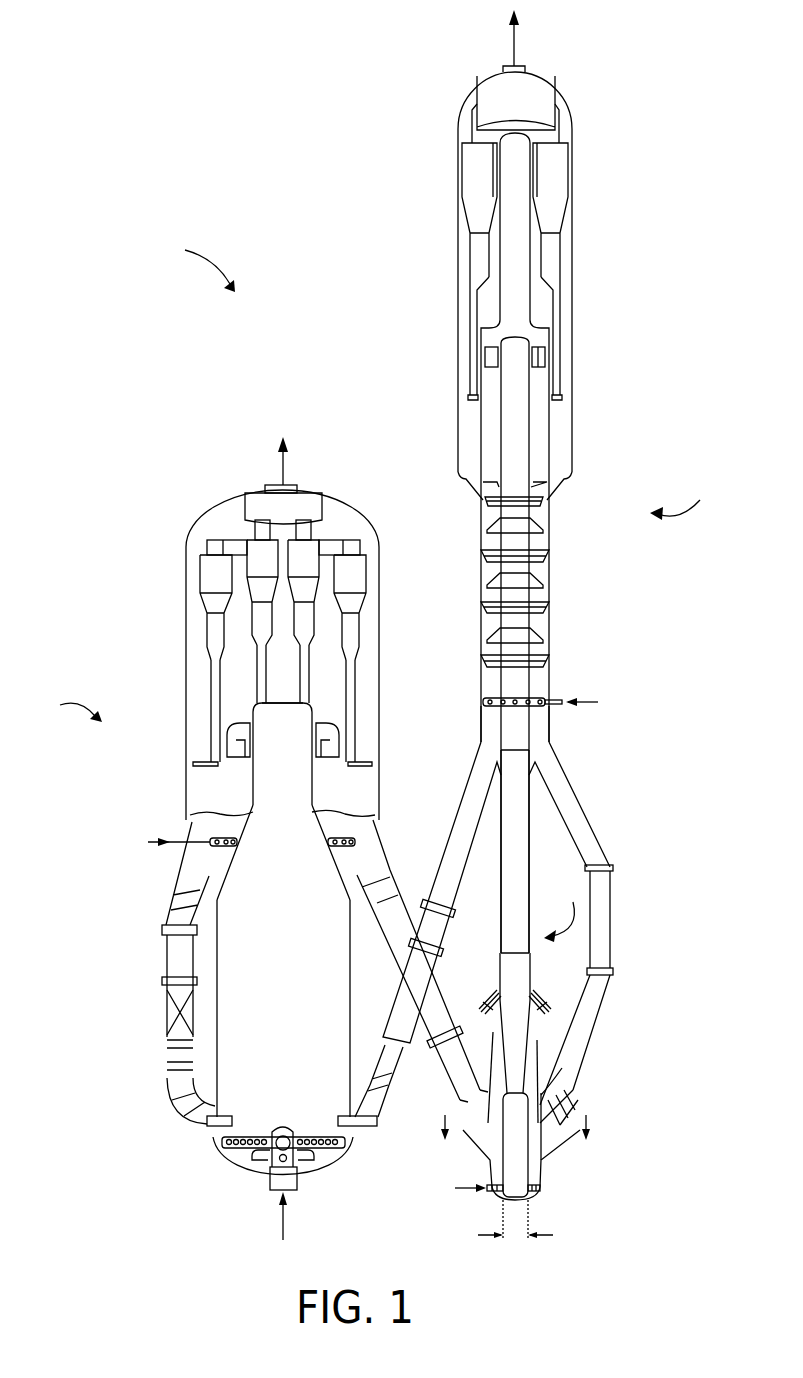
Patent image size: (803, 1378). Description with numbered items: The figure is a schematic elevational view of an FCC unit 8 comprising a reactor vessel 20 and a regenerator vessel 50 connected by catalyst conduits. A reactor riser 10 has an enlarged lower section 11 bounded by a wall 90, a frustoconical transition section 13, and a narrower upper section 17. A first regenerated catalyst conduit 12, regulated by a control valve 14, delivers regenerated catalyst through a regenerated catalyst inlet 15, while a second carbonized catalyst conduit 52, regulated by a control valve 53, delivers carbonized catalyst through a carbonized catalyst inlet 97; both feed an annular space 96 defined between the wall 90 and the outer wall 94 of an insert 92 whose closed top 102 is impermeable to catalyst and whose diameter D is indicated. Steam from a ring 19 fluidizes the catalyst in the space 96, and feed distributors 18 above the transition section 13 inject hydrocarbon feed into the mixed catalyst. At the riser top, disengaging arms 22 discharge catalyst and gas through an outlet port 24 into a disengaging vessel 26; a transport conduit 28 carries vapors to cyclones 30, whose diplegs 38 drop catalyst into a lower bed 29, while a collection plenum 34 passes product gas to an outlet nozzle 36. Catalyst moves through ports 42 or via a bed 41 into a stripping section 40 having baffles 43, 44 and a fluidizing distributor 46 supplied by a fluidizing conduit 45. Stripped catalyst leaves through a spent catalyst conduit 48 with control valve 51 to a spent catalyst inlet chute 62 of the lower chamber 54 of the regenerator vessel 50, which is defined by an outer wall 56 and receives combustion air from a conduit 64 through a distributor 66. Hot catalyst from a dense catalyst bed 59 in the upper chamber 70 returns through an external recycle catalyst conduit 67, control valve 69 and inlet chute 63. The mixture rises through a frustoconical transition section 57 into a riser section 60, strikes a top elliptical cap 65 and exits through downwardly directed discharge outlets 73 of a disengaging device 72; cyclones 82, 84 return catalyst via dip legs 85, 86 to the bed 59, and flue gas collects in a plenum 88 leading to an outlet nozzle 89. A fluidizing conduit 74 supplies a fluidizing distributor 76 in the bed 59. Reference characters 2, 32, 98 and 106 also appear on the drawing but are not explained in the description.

The section line 2 is at (516, 1128).
The FCC unit 8 is at (199, 259).
The reactor riser 10 is at (559, 906).
The enlarged lower section 11 is at (489, 1108).
The first regenerated catalyst conduit 12 is at (424, 982).
The frustoconical transition section 13 is at (545, 1032).
The control valve 14 is at (396, 1092).
The regenerated catalyst inlet 15 is at (503, 1170).
The narrower upper section 17 is at (532, 818).
The feed distributors 18 is at (495, 993).
The fluidizing ring 19 is at (492, 1195).
The reactor vessel 20 is at (689, 500).
The disengaging arms 22 is at (490, 348).
The outlet port 24 is at (530, 398).
The disengaging vessel 26 is at (540, 425).
The transport conduit 28 is at (517, 215).
The lower bed 29 is at (548, 500).
The cyclones 30 is at (478, 163).
The reactor vessel shell 32 is at (567, 278).
The collection plenum 34 is at (535, 95).
The outlet nozzle 36 is at (503, 70).
The diplegs 38 is at (472, 360).
The stripping section 40 is at (540, 573).
The bed 41 is at (497, 478).
The ports 42 is at (483, 490).
The baffles 43 is at (535, 606).
The baffles 44 is at (530, 580).
The fluidizing conduit 45 is at (556, 710).
The fluidizing distributor 46 is at (550, 700).
The spent catalyst conduit 48 is at (458, 845).
The regenerator vessel 50 is at (63, 703).
The control valve 51 is at (380, 1118).
The second carbonized catalyst conduit 52 is at (592, 832).
The control valve 53 is at (580, 1095).
The lower chamber 54 is at (312, 1052).
The outer wall 56 is at (352, 930).
The frustoconical transition section 57 is at (388, 876).
The dense catalyst bed 59 is at (190, 827).
The riser section 60 is at (305, 790).
The spent catalyst inlet chute 62 is at (355, 1125).
The inlet chute 63 is at (220, 1122).
The conduit 64 is at (278, 1182).
The top elliptical cap 65 is at (285, 703).
The distributor 66 is at (290, 1195).
The external recycle catalyst conduit 67 is at (172, 965).
The control valve 69 is at (170, 1030).
The upper chamber 70 is at (382, 706).
The disengaging device 72 is at (240, 722).
The discharge outlets 73 is at (322, 760).
The fluidizing conduit 74 is at (205, 846).
The fluidizing distributor 76 is at (357, 844).
The cyclones 82 is at (210, 575).
The cyclones 84 is at (265, 555).
The dip legs 85 is at (357, 690).
The dip legs 86 is at (265, 665).
The plenum 88 is at (268, 500).
The outlet nozzle 89 is at (298, 490).
The wall 90 is at (470, 1189).
The insert 92 is at (550, 1185).
The outer wall 94 is at (548, 1175).
The annular space 96 is at (538, 1120).
The carbonized catalyst inlet 97 is at (545, 1178).
The riser base wall 98 is at (536, 1066).
The closed top 102 is at (455, 1036).
The catalyst inlet 106 is at (578, 1082).